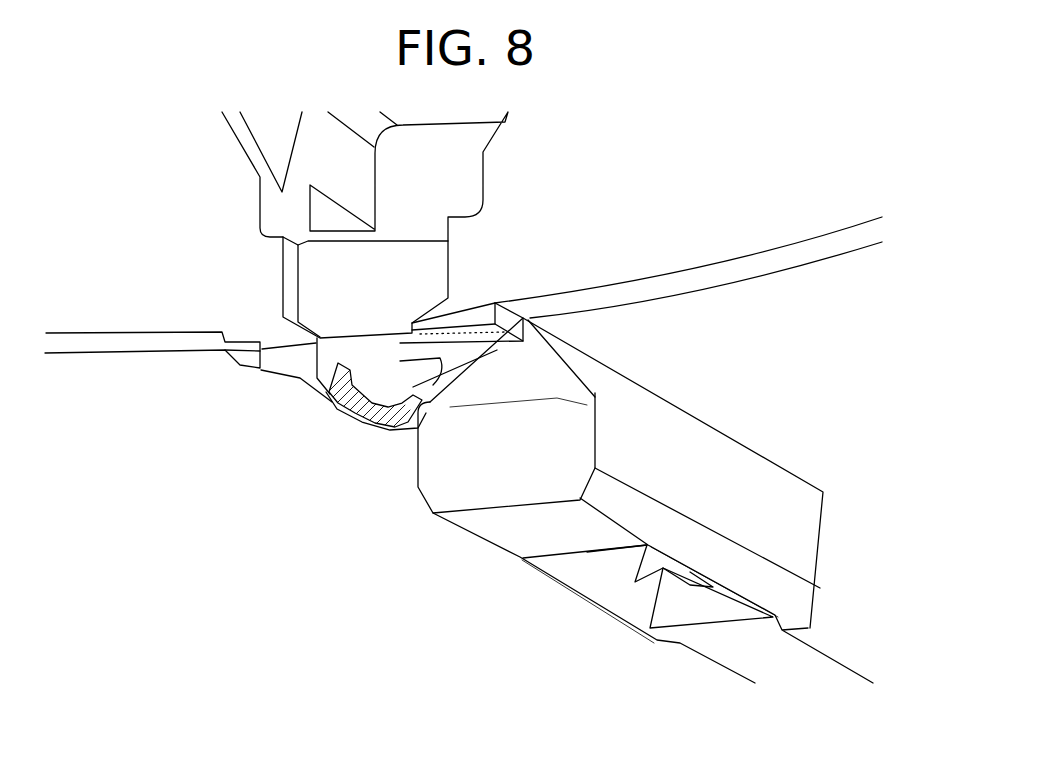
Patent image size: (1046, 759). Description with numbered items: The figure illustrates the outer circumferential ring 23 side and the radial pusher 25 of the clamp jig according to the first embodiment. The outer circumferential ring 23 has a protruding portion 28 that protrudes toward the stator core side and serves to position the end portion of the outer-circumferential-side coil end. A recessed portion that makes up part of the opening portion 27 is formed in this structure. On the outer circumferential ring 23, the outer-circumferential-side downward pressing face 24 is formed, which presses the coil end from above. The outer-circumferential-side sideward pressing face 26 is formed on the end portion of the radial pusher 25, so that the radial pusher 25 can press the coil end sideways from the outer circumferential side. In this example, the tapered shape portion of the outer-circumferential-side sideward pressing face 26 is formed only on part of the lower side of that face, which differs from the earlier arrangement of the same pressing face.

The outer circumferential ring 23 is at (707, 277).
The outer-circumferential-side downward pressing face 24 is at (437, 350).
The radial pusher 25 is at (723, 460).
The outer-circumferential-side sideward pressing face 26 is at (338, 412).
The opening portion 27 is at (360, 317).
The protruding portion 28 is at (287, 372).